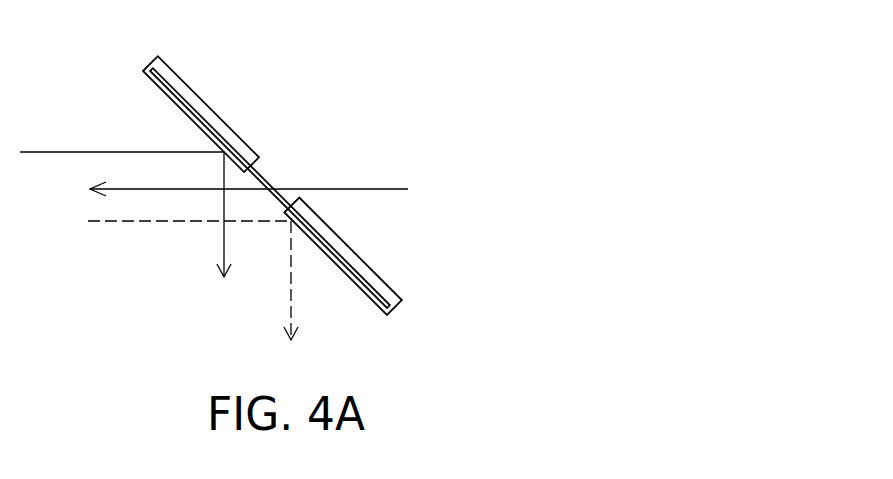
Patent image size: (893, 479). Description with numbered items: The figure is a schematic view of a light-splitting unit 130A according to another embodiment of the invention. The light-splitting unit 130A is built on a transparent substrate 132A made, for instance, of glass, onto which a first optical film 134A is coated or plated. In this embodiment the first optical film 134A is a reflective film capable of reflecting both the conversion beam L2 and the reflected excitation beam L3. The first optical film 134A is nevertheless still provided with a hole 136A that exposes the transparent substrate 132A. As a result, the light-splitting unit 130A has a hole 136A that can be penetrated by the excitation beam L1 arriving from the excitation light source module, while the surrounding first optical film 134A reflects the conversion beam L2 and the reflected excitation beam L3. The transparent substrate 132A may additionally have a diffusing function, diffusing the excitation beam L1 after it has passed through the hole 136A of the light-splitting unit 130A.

The light-splitting unit 130A is at (352, 207).
The transparent substrate 132A is at (365, 285).
The first optical film 134A is at (210, 112).
The hole 136A is at (255, 162).
The excitation beam L1 is at (365, 189).
The conversion beam L2 is at (141, 221).
The reflected excitation beam L3 is at (83, 152).